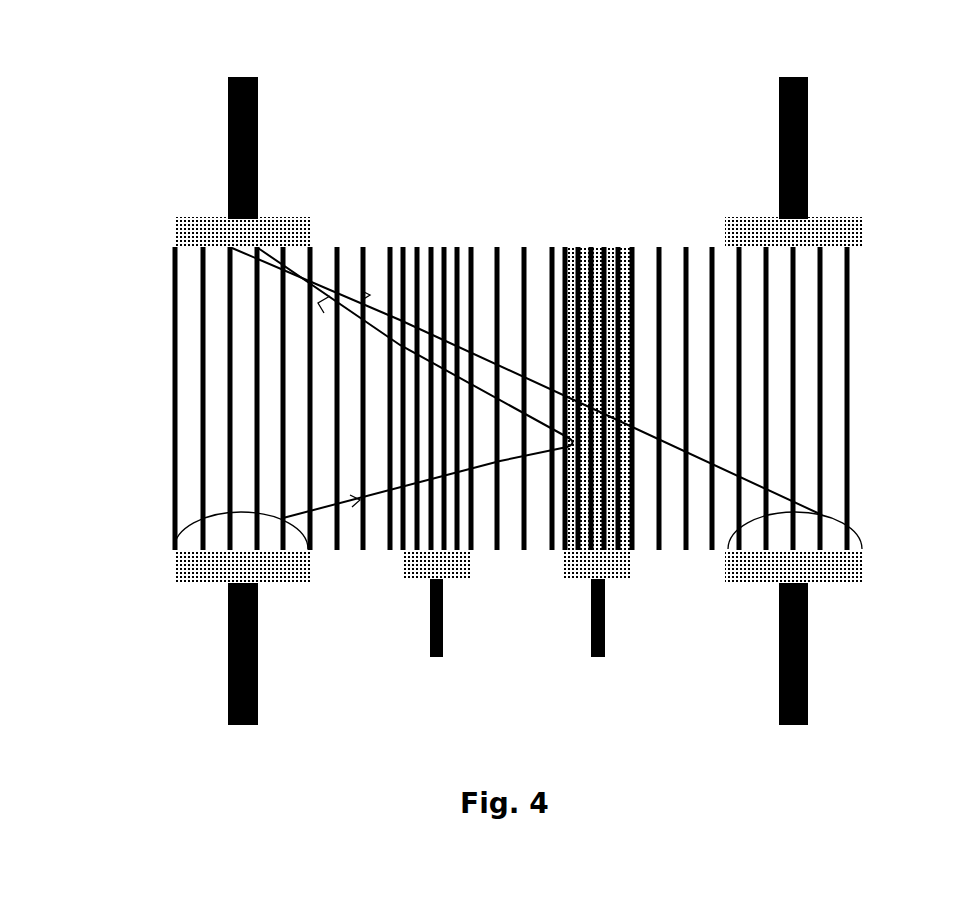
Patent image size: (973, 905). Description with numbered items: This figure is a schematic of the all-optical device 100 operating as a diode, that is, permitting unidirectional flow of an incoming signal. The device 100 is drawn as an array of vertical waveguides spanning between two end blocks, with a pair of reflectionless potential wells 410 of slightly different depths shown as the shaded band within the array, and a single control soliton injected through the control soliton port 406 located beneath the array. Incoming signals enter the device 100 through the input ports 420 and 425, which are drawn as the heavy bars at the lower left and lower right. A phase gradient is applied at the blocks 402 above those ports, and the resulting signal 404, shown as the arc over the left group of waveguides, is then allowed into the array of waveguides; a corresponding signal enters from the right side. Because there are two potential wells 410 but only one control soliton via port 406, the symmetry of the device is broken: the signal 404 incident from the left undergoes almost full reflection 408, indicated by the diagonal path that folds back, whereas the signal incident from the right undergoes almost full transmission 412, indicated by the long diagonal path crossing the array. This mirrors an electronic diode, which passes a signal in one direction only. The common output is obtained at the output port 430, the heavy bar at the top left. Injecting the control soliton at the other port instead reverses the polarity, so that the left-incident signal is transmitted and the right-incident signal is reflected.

The all-optical device 100 is at (135, 117).
The phase gradient location 402 is at (172, 565).
The signal 404 is at (175, 528).
The control soliton port 406 is at (607, 643).
The reflection 408 is at (265, 267).
The potential wells 410 is at (591, 247).
The transmission 412 is at (317, 283).
The input port 420 is at (228, 674).
The input port 425 is at (808, 685).
The output port 430 is at (258, 113).